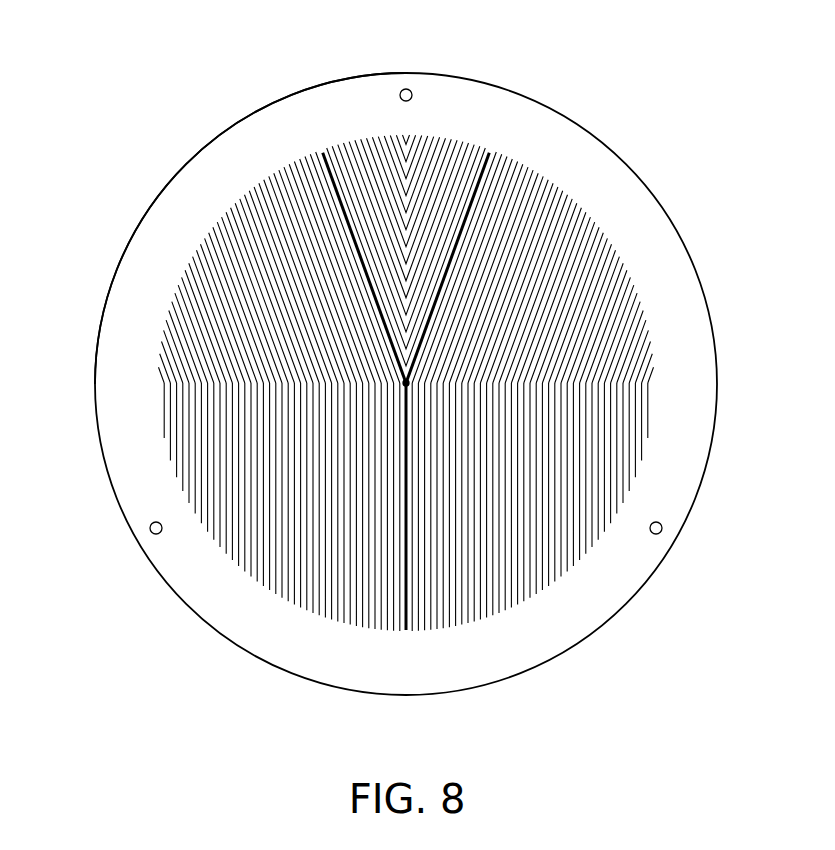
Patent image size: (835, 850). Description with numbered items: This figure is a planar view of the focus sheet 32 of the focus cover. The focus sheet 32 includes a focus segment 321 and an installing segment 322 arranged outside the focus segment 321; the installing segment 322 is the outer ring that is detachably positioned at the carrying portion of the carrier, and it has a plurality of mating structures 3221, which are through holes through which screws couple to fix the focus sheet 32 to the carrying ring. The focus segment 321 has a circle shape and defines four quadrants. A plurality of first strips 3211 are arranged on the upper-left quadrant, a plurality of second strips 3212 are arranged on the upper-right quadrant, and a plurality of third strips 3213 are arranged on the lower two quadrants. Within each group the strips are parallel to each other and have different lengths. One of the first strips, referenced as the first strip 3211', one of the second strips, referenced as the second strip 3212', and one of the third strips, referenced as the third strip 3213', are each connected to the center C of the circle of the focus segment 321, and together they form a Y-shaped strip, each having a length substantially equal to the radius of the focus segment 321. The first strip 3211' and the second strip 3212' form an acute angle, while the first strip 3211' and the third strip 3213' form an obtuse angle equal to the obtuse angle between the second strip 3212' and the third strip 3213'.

The focus sheet 32 is at (708, 37).
The focus segment 321 is at (213, 237).
The installing segment 322 is at (110, 290).
The first strips 3211 is at (211, 267).
The second strips 3212 is at (600, 267).
The third strips 3213 is at (477, 507).
The first strip 3211' is at (357, 212).
The second strip 3212' is at (459, 212).
The third strip 3213' is at (376, 563).
The mating structures 3221 is at (148, 526).
The center of circle C is at (406, 383).